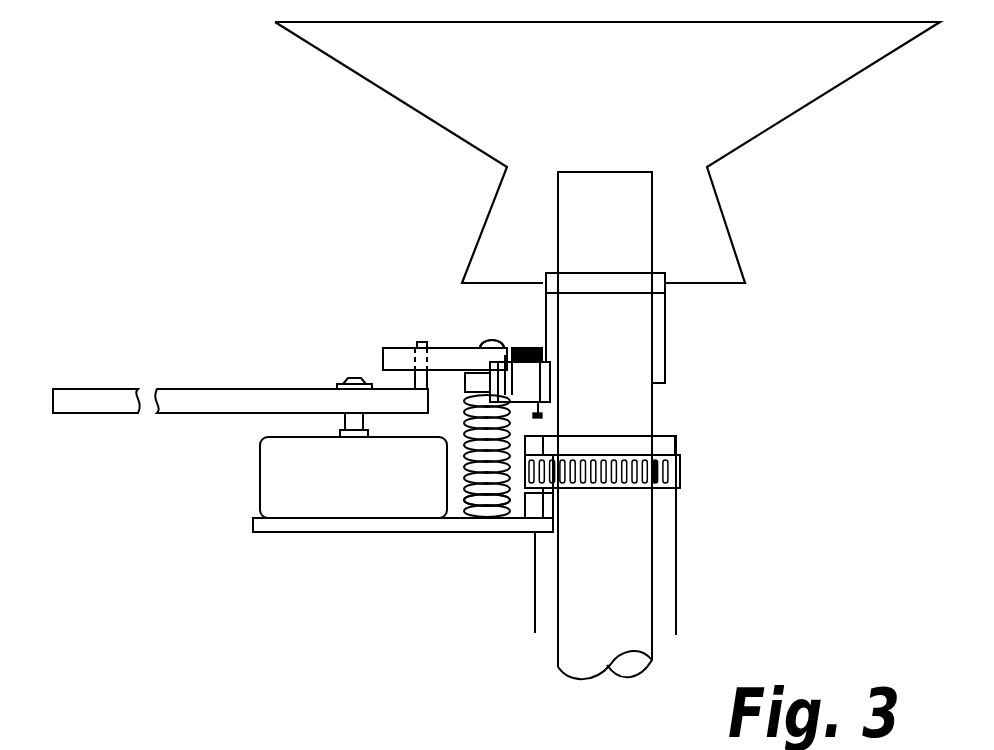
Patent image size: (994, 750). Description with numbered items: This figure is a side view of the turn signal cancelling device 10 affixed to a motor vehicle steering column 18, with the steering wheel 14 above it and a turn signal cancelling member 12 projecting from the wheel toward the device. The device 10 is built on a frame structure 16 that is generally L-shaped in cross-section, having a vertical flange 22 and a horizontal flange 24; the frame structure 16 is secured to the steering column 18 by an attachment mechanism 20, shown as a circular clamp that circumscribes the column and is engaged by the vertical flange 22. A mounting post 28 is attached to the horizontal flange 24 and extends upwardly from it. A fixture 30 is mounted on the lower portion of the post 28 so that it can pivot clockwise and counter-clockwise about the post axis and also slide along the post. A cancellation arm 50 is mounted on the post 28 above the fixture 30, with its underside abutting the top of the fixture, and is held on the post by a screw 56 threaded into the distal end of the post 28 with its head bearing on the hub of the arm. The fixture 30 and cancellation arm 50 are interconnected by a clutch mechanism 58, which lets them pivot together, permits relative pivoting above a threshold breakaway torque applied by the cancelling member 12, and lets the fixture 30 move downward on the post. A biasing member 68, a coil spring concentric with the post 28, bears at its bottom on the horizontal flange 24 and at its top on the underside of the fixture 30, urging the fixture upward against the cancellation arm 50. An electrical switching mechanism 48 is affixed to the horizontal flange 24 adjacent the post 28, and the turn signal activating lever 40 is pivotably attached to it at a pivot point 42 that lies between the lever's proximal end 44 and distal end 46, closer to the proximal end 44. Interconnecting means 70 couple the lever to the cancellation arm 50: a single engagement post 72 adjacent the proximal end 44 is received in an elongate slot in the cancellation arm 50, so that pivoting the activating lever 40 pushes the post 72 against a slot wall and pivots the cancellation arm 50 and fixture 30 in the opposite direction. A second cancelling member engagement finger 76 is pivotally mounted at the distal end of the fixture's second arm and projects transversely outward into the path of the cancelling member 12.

The turn signal cancelling device 10 is at (272, 197).
The turn signal cancelling member 12 is at (553, 322).
The steering wheel 14 is at (837, 87).
The frame structure 16 is at (435, 537).
The steering column 18 is at (677, 582).
The attachment mechanism 20 is at (680, 470).
The vertical flange 22 is at (555, 508).
The horizontal flange 24 is at (353, 532).
The mounting post 28 is at (497, 493).
The fixture 30 is at (525, 387).
The turn signal activating lever 40 is at (168, 398).
The pivot point 42 is at (348, 423).
The proximal end 44 is at (402, 402).
The distal end 46 is at (70, 398).
The electrical switching mechanism 48 is at (276, 493).
The cancellation arm 50 is at (458, 348).
The screw 56 is at (490, 340).
The clutch mechanism 58 is at (510, 343).
The biasing member 68 is at (480, 477).
The interconnecting means 70 is at (402, 302).
The engagement post 72 is at (420, 347).
The second cancelling member engagement finger 76 is at (550, 380).